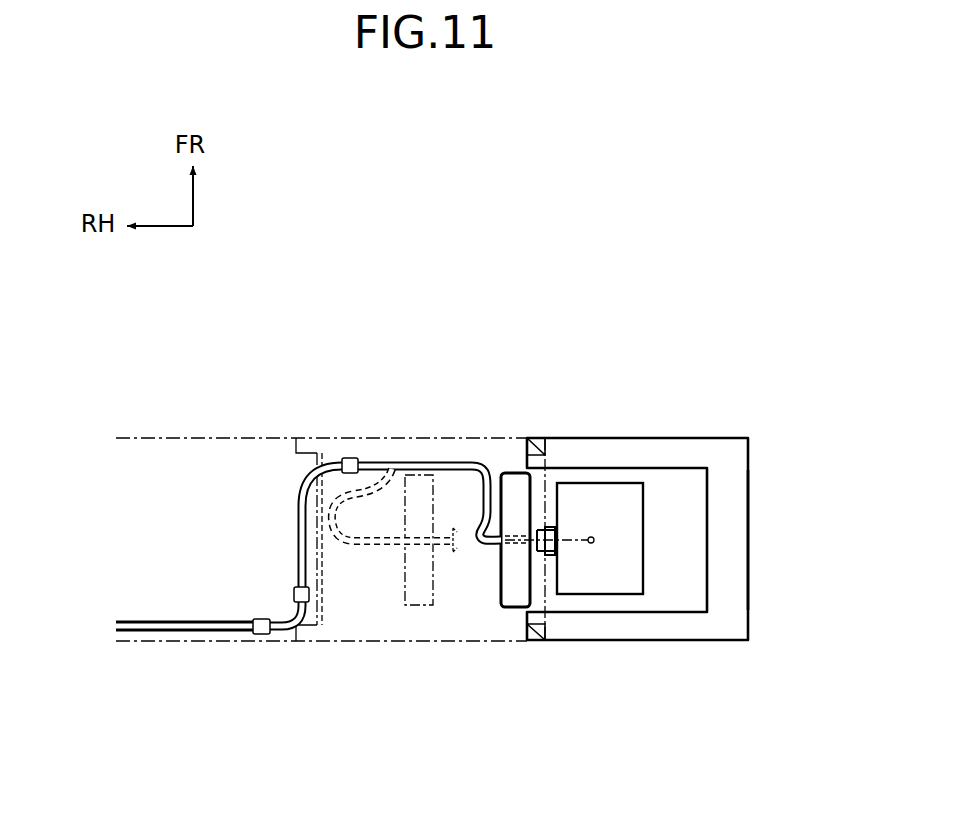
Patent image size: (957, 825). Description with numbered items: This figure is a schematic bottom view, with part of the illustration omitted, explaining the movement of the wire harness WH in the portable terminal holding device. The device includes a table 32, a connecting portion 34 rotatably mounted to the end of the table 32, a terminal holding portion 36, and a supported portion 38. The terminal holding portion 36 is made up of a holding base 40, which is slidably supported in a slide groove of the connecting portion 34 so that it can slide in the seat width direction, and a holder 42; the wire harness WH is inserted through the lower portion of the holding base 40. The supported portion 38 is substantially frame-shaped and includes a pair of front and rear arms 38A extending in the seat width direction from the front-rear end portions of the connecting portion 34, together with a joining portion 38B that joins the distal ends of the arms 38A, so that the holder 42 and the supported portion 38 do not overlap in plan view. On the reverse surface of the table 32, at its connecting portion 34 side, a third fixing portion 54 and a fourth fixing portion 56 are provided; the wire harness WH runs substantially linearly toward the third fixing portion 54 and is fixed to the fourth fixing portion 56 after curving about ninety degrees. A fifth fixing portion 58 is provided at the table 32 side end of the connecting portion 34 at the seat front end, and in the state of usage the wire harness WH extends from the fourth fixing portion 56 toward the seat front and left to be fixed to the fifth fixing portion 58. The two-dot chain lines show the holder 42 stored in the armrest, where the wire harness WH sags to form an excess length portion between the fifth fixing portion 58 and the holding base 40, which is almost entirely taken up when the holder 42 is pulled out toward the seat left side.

The table 32 is at (178, 436).
The connecting portion 34 is at (395, 436).
The terminal holding portion 36 is at (654, 491).
The supported portion 38 is at (683, 645).
The arm 38A is at (597, 438).
The joining portion 38B is at (749, 548).
The holding base 40 is at (507, 470).
The holder 42 is at (623, 481).
The third fixing portion 54 is at (262, 635).
The fourth fixing portion 56 is at (310, 594).
The fifth fixing portion 58 is at (350, 456).
The wire harness WH is at (168, 634).